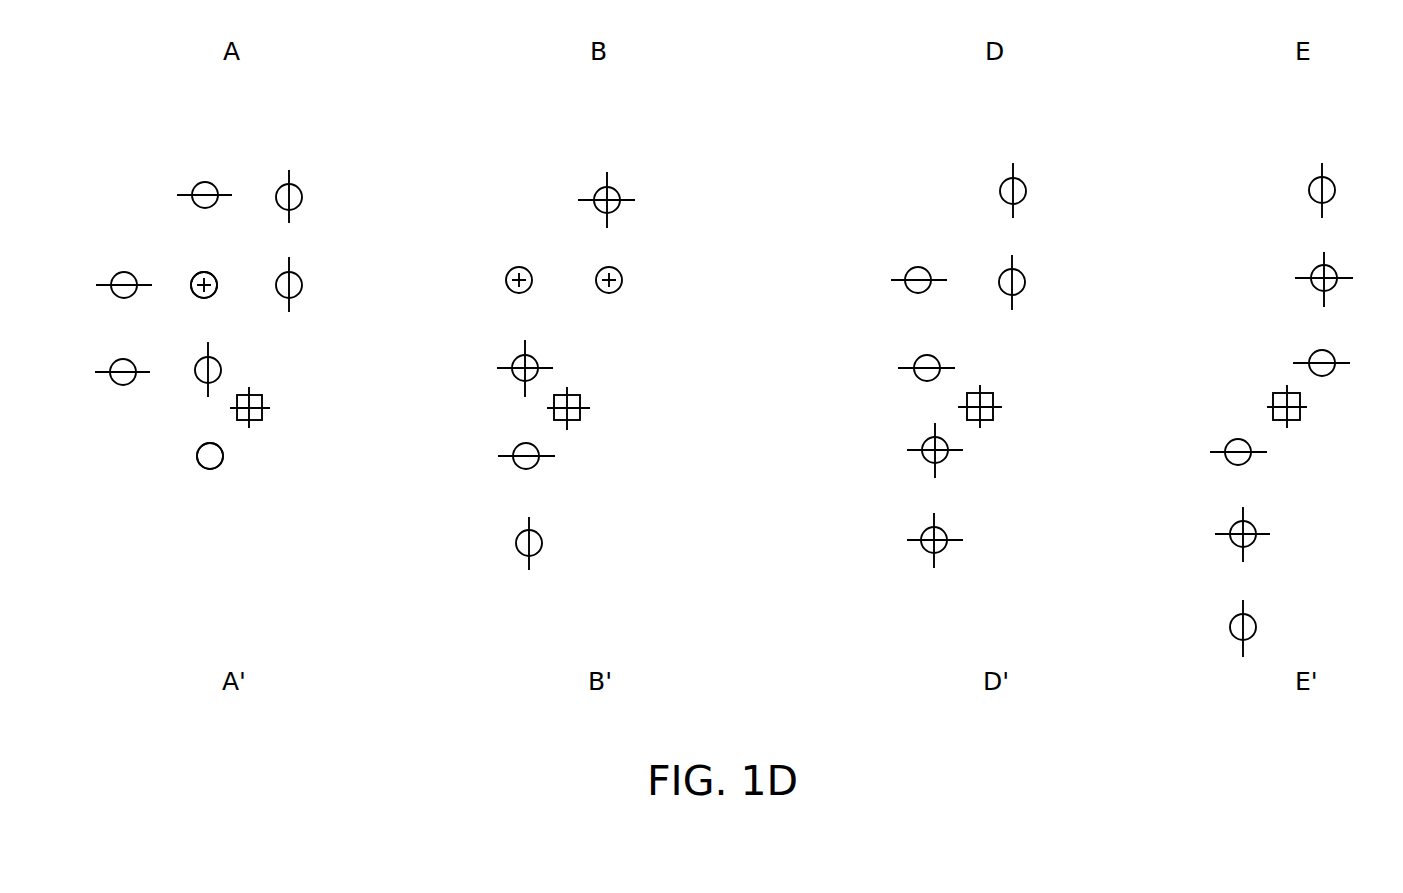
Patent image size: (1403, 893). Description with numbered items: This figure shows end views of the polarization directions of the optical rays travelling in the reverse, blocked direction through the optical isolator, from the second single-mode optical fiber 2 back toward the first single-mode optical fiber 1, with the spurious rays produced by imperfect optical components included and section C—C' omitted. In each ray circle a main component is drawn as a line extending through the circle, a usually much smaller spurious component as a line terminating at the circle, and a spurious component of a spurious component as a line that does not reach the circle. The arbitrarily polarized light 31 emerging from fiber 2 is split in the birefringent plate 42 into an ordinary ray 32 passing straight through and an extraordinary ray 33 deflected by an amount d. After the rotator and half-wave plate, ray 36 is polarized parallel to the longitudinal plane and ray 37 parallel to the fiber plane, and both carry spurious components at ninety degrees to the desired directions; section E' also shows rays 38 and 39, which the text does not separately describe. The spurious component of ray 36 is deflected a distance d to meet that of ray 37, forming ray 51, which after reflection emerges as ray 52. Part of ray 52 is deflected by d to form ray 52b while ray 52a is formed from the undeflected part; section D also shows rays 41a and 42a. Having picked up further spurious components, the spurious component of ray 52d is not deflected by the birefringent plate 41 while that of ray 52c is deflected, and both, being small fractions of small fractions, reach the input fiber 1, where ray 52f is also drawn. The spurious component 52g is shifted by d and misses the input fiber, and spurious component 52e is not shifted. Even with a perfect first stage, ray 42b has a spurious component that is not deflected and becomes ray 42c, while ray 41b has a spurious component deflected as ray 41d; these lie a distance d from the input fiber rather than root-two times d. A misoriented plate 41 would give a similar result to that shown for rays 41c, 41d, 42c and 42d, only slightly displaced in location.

The single-mode optical fiber 1 is at (197, 275).
The single-mode optical fiber 2 is at (198, 463).
The arbitrarily polarized light 31 is at (215, 455).
The ordinary ray 32 is at (518, 448).
The extraordinary ray 33 is at (537, 535).
The ray 36 is at (923, 443).
The ray 37 is at (943, 533).
The beam 38 is at (1230, 442).
The beam 39 is at (1252, 618).
The birefringent plate 41 is at (1330, 182).
The beam 41a is at (1020, 182).
The ray 41b is at (615, 192).
The ray 41c is at (297, 187).
The ray 41d is at (196, 185).
The birefringent plate 42 is at (1313, 352).
The beam 42a is at (918, 358).
The ray 42b is at (533, 360).
The ray 42c is at (212, 362).
The ray 42d is at (114, 384).
The ray 51 is at (1232, 528).
The ray 52 is at (1335, 272).
The ray 52a is at (1018, 273).
The ray 52b is at (912, 272).
The ray 52c is at (617, 273).
The ray 52d is at (525, 270).
The spurious component 52e is at (297, 277).
The beam 52f is at (210, 275).
The spurious component 52g is at (112, 275).